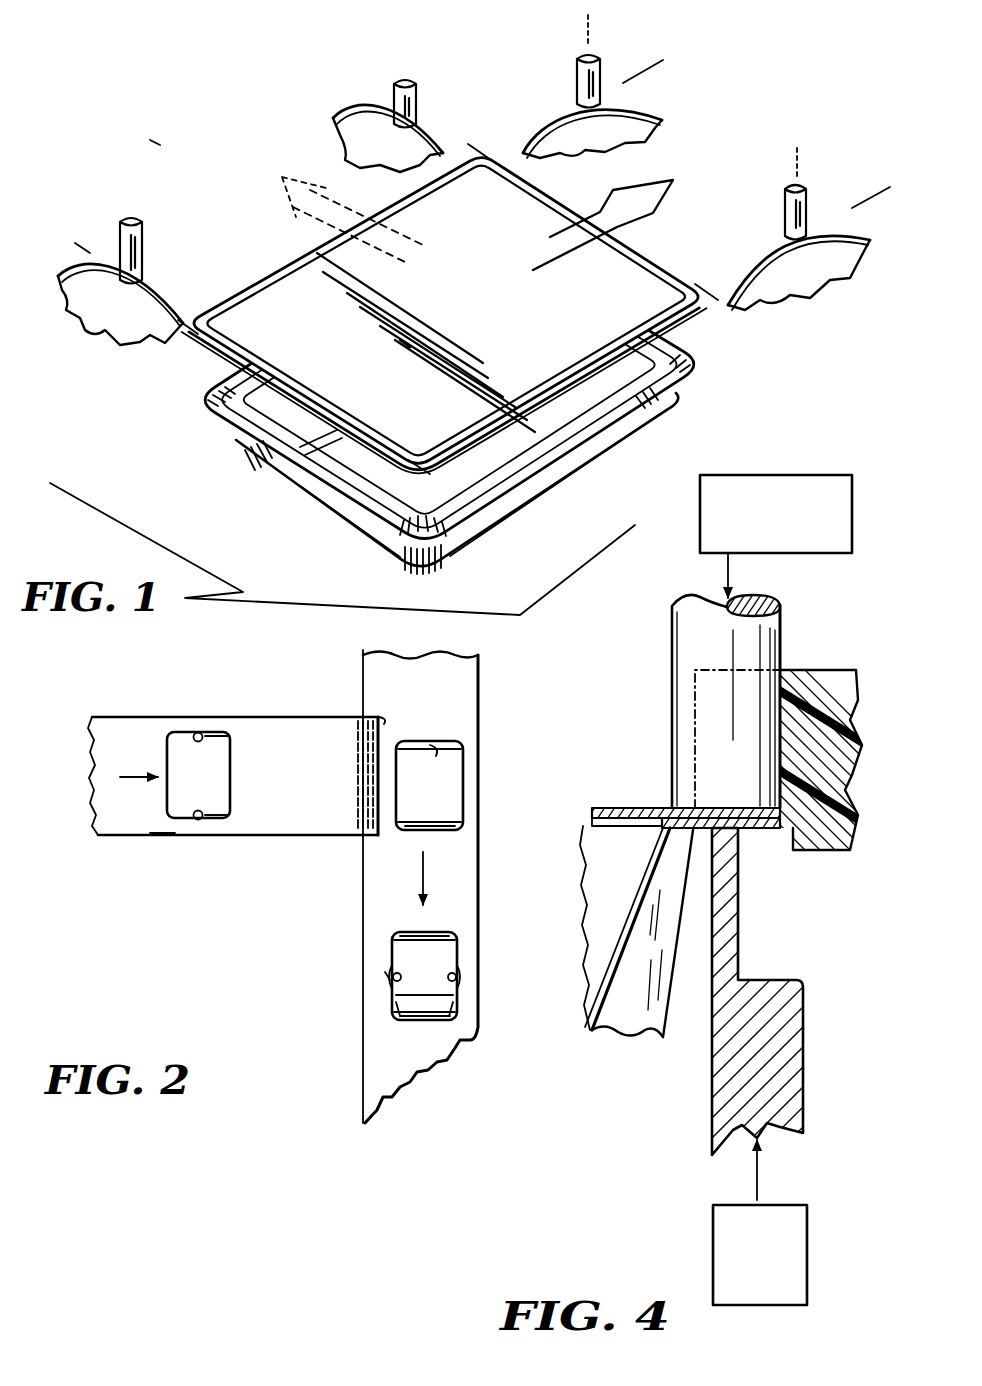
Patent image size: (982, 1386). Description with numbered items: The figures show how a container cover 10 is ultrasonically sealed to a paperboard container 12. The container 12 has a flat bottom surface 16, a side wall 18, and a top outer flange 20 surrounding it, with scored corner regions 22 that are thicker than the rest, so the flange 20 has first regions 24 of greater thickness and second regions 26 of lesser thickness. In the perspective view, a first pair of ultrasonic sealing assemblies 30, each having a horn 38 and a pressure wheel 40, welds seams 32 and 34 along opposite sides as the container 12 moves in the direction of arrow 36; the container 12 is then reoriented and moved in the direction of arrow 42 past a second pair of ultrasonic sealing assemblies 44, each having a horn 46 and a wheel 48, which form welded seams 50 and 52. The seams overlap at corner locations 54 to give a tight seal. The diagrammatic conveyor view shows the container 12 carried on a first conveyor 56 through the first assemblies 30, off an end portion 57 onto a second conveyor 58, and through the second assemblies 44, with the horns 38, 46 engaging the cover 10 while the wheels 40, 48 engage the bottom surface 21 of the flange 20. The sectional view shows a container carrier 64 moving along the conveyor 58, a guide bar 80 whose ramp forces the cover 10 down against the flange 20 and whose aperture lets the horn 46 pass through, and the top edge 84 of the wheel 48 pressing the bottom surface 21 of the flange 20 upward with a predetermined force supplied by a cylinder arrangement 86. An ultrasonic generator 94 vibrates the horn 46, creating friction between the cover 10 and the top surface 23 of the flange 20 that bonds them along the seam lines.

In FIG. 1, the container cover 10 is at (456, 307).
In FIG. 2, the container cover 10 is at (408, 806).
In FIG. 4, the container cover 10 is at (628, 806).
In FIG. 1, the container 12 is at (676, 427).
In FIG. 2, the container 12 is at (162, 822).
In FIG. 4, the container 12 is at (590, 1050).
In FIG. 1, the flat bottom surface 16 is at (552, 497).
In FIG. 1, the side wall 18 is at (362, 525).
In FIG. 4, the side wall 18 is at (630, 903).
In FIG. 1, the top outer flange 20 is at (598, 432).
In FIG. 4, the top outer flange 20 is at (705, 830).
In FIG. 4, the bottom surface of flange 21 is at (768, 830).
In FIG. 1, the corner regions 22 is at (247, 460).
In FIG. 4, the top surface of flange 23 is at (840, 775).
In FIG. 1, the first regions 24 is at (200, 393).
In FIG. 1, the second regions 26 is at (330, 480).
In FIG. 1, the first pair of ultrasonic sealing assemblies 30 is at (205, 180).
In FIG. 2, the first pair of ultrasonic sealing assemblies 30 is at (186, 712).
In FIG. 1, the welded seam 32 is at (302, 378).
In FIG. 2, the welded seam 32 is at (220, 738).
In FIG. 1, the welded seam 34 is at (637, 250).
In FIG. 2, the welded seam 34 is at (218, 820).
In FIG. 1, the arrow indicating first direction 36 is at (268, 224).
In FIG. 2, the arrow indicating first direction 36 is at (140, 780).
In FIG. 1, the horn 38 is at (140, 250).
In FIG. 2, the horn 38 is at (202, 734).
In FIG. 1, the pressure wheel 40 is at (113, 320).
In FIG. 1, the arrow indicating second direction 42 is at (640, 218).
In FIG. 2, the arrow indicating second direction 42 is at (423, 870).
In FIG. 1, the second pair of ultrasonic sealing assemblies 44 is at (745, 140).
In FIG. 2, the second pair of ultrasonic sealing assemblies 44 is at (380, 978).
In FIG. 1, the horn 46 is at (580, 85).
In FIG. 2, the horn 46 is at (392, 962).
In FIG. 4, the horn 46 is at (698, 640).
In FIG. 1, the pressure wheel 48 is at (640, 127).
In FIG. 4, the pressure wheel 48 is at (735, 1090).
In FIG. 1, the welded seam 50 is at (278, 288).
In FIG. 1, the welded seam 52 is at (456, 436).
In FIG. 2, the welded seam 52 is at (393, 1000).
In FIG. 1, the overlap locations 54 is at (484, 152).
In FIG. 2, the overlap locations 54 is at (455, 1005).
In FIG. 2, the first conveyor 56 is at (307, 808).
In FIG. 2, the end portion of first conveyor 57 is at (375, 715).
In FIG. 2, the second conveyor 58 is at (392, 1043).
In FIG. 4, the container carrier 64 is at (633, 1020).
In FIG. 4, the guide bar 80 is at (822, 676).
In FIG. 4, the top edge of wheel 84 is at (723, 795).
In FIG. 4, the cylinder arrangement 86 is at (730, 1250).
In FIG. 4, the ultrasonic generator 94 is at (818, 545).